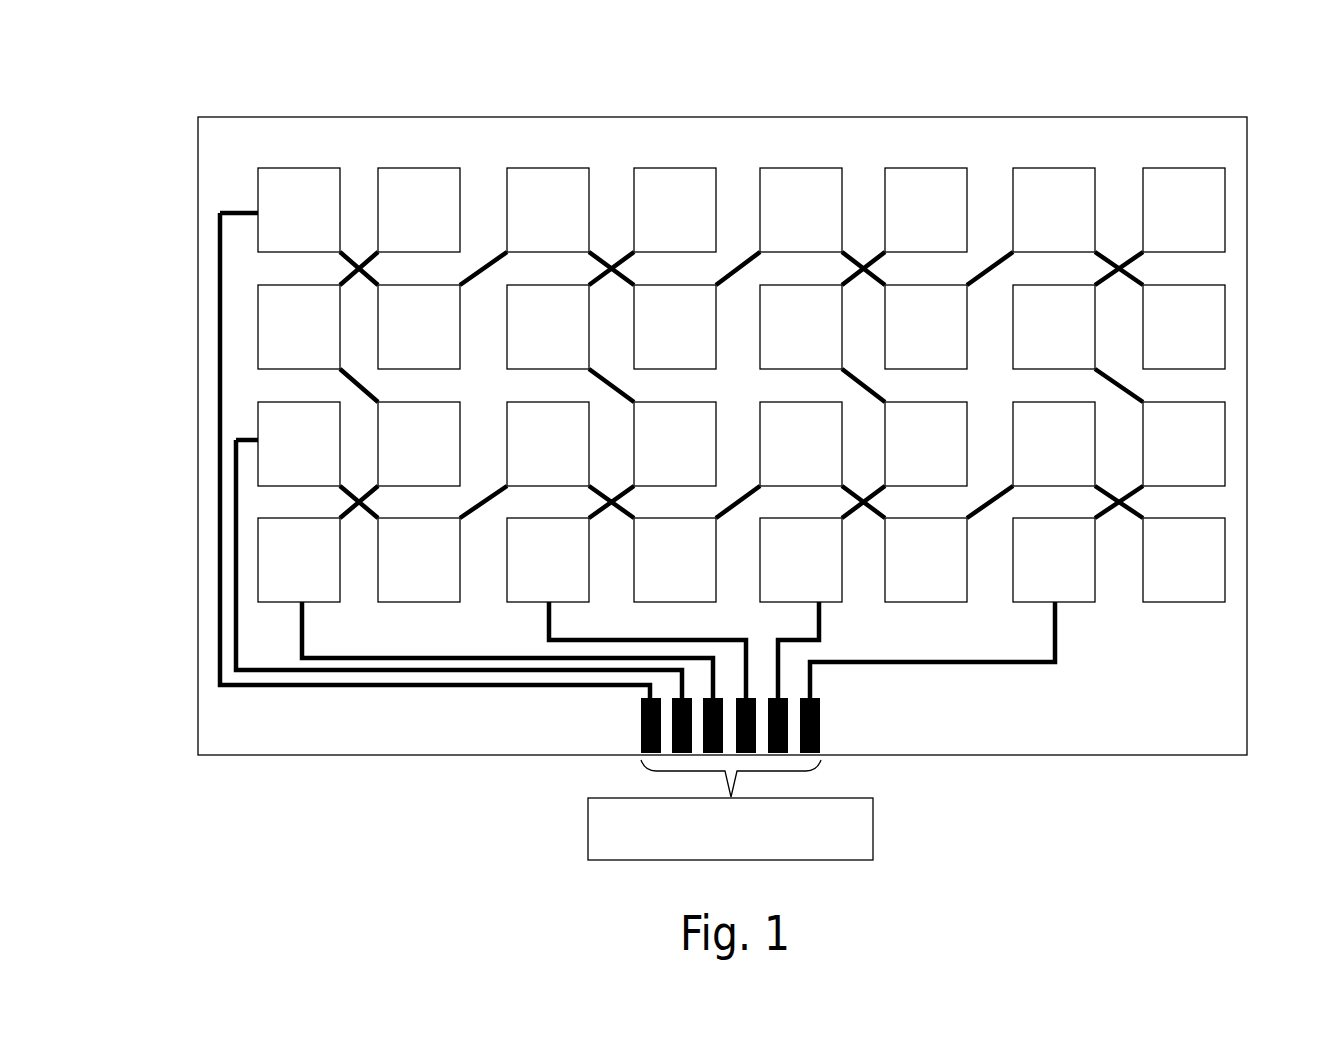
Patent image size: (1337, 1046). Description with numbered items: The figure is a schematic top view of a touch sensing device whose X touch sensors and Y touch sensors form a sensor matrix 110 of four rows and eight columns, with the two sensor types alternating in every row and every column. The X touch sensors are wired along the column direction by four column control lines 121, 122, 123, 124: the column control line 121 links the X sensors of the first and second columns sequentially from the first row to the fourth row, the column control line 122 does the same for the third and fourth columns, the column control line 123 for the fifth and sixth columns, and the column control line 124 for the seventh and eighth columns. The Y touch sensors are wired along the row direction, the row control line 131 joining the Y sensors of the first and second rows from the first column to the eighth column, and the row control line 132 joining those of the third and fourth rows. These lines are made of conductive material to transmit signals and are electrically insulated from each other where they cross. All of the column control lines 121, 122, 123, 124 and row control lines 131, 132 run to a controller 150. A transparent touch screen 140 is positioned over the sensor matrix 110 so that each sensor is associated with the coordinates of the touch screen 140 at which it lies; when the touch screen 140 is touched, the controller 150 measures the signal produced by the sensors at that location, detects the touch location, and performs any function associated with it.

The sensor matrix 110 is at (852, 150).
The column control line 121 is at (369, 252).
The column control line 122 is at (626, 252).
The column control line 123 is at (822, 643).
The column control line 124 is at (1057, 663).
The row control line 131 is at (220, 340).
The row control line 132 is at (236, 500).
The transparent touch screen 140 is at (1063, 145).
The controller 150 is at (842, 840).